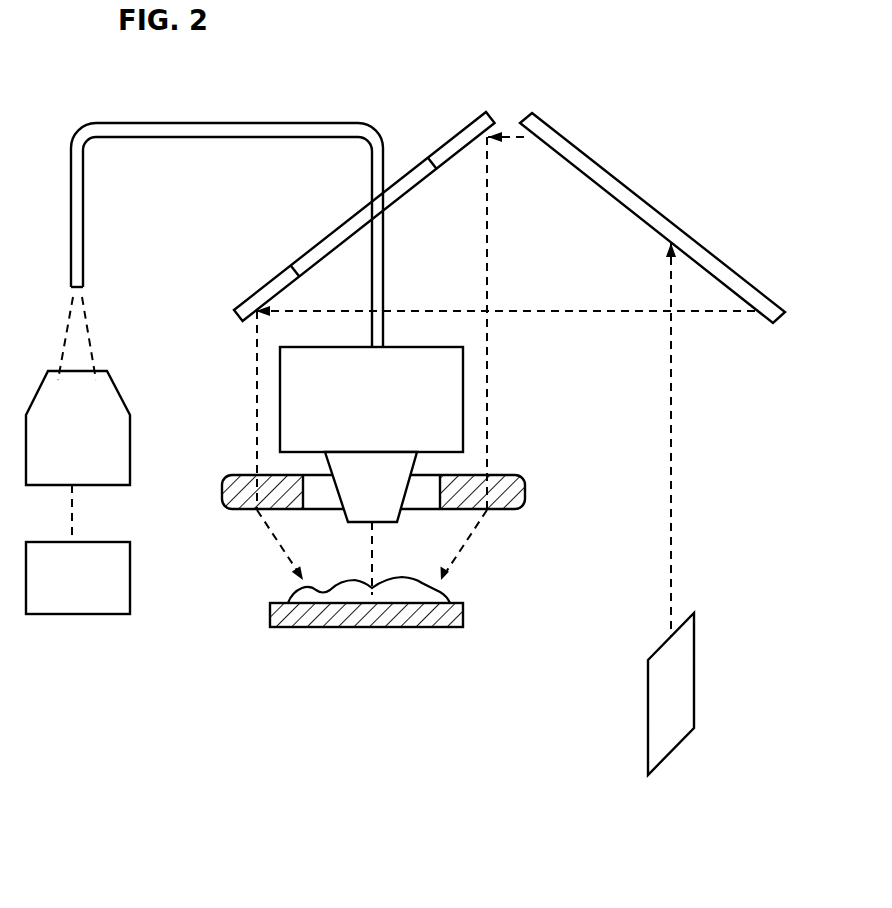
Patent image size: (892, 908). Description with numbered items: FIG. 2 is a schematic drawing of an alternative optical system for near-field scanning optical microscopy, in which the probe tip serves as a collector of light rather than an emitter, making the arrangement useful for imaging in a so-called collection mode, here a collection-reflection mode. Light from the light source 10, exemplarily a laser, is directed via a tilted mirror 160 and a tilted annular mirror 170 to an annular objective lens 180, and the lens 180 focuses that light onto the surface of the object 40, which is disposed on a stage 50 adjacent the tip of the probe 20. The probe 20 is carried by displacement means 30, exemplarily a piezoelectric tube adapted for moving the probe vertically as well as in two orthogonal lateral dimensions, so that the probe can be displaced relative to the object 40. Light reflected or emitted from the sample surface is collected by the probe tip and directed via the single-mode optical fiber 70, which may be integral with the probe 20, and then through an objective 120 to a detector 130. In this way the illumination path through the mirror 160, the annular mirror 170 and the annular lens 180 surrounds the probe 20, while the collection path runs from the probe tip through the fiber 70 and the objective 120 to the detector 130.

The light source 10 is at (648, 695).
The probe 20 is at (383, 497).
The displacement means 30 is at (425, 347).
The object 40 is at (447, 592).
The stage 50 is at (466, 613).
The single-mode optical fiber 70 is at (320, 123).
The objective 120 is at (110, 392).
The detector 130 is at (102, 542).
The tilted mirror 160 is at (592, 160).
The tilted annular mirror 170 is at (458, 134).
The annular objective lens 180 is at (513, 475).